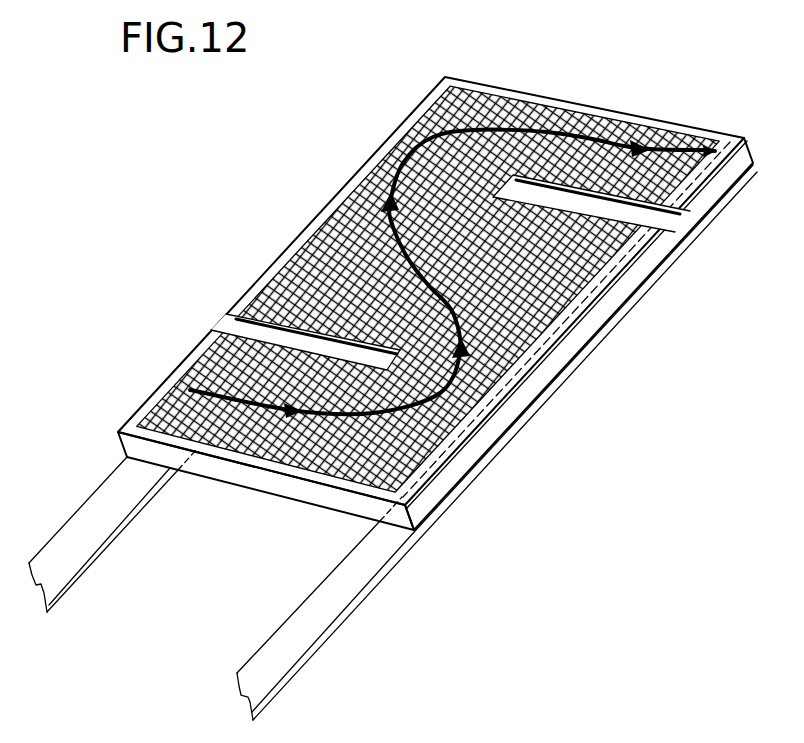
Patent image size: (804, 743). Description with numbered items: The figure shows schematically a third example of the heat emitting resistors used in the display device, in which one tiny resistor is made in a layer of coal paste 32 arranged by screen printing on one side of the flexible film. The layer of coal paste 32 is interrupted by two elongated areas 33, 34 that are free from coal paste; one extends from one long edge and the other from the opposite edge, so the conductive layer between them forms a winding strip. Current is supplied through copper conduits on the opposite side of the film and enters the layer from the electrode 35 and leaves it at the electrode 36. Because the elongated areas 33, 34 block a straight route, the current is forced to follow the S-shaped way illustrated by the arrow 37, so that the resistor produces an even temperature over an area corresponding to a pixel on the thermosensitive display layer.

The layer of coal paste 32 is at (548, 330).
The elongated area 33 is at (297, 327).
The elongated area 34 is at (590, 200).
The electrode 35 is at (113, 503).
The electrode 36 is at (334, 598).
The arrow 37 is at (418, 128).